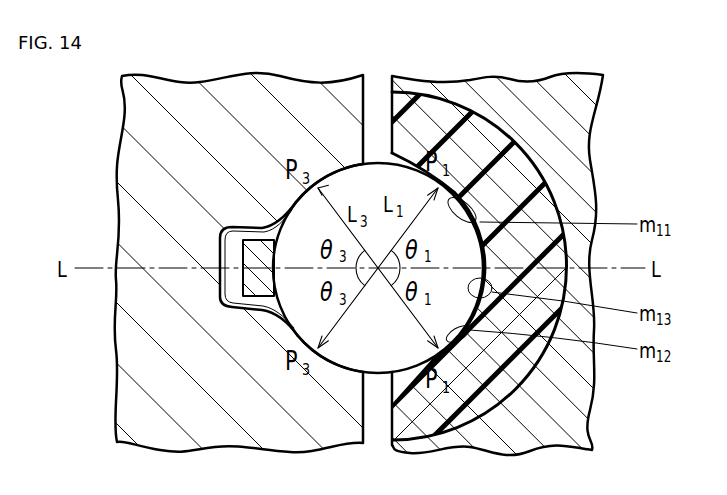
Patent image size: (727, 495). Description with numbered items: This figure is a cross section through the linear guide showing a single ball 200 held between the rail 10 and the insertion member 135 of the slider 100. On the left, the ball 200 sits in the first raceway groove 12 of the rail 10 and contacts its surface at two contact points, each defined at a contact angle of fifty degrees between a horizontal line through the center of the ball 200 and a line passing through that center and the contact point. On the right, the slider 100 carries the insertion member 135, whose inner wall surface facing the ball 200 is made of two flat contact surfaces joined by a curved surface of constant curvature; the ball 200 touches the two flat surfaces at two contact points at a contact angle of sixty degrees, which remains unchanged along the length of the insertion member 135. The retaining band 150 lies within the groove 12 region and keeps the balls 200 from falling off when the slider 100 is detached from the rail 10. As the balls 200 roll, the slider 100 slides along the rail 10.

The rail 10 is at (315, 128).
The first raceway groove 12 is at (297, 200).
The slider 100 is at (567, 152).
The insertion member 135 is at (519, 202).
The retaining band 150 is at (267, 282).
The ball 200 is at (390, 352).